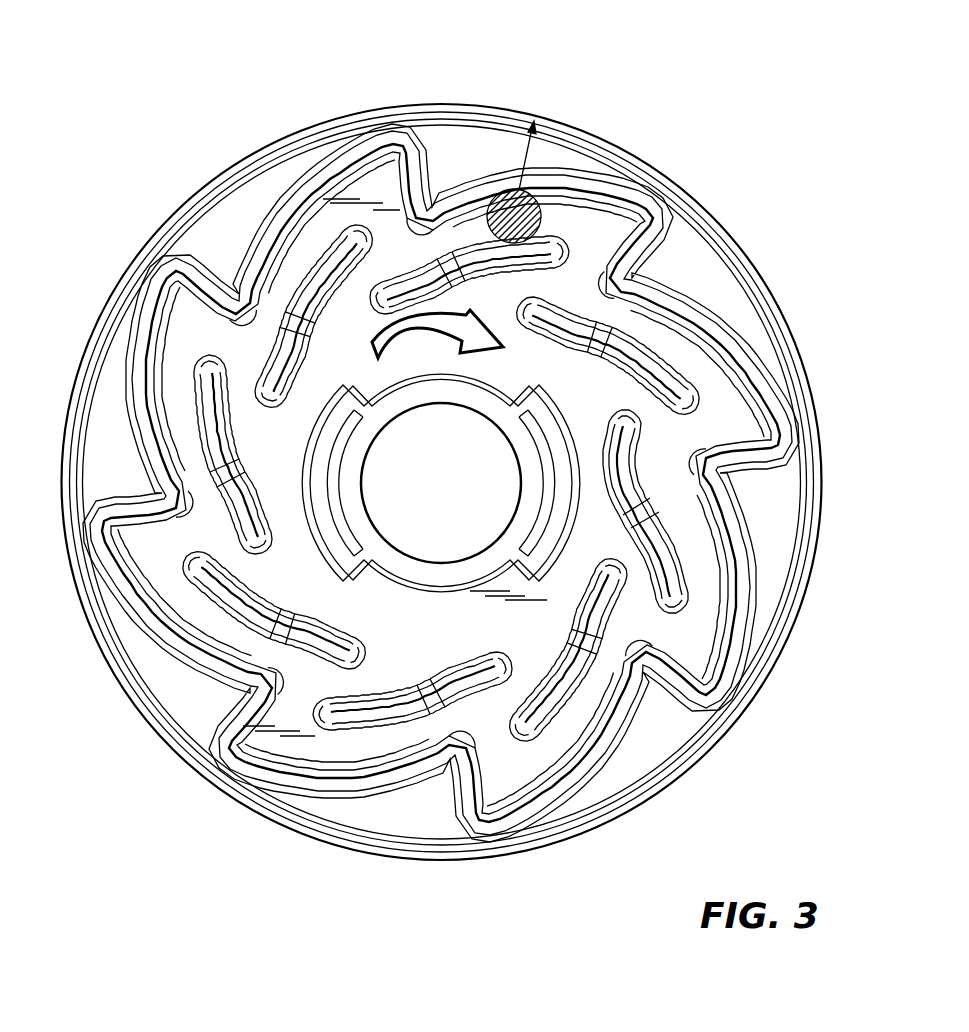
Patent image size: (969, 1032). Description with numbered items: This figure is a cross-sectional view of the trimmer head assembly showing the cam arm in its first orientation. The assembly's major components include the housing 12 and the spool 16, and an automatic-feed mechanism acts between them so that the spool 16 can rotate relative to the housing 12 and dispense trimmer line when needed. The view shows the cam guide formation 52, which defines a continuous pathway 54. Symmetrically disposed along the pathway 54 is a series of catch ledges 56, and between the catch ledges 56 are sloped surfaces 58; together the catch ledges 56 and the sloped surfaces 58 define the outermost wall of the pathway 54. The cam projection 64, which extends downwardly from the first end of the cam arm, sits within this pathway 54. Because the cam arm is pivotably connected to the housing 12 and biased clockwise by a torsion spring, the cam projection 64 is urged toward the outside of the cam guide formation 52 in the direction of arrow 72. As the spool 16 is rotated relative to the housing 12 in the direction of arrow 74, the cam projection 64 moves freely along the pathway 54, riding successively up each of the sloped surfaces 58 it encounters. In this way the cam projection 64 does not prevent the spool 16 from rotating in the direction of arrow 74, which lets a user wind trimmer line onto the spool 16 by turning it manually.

The housing 12 is at (103, 310).
The spool 16 is at (187, 228).
The cam guide formation 52 is at (377, 62).
The pathway 54 is at (267, 187).
The catch ledges 56 is at (640, 250).
The sloped surfaces 58 is at (725, 390).
The cam projection 64 is at (541, 212).
The arrow 72 is at (540, 125).
The arrow 74 is at (489, 322).